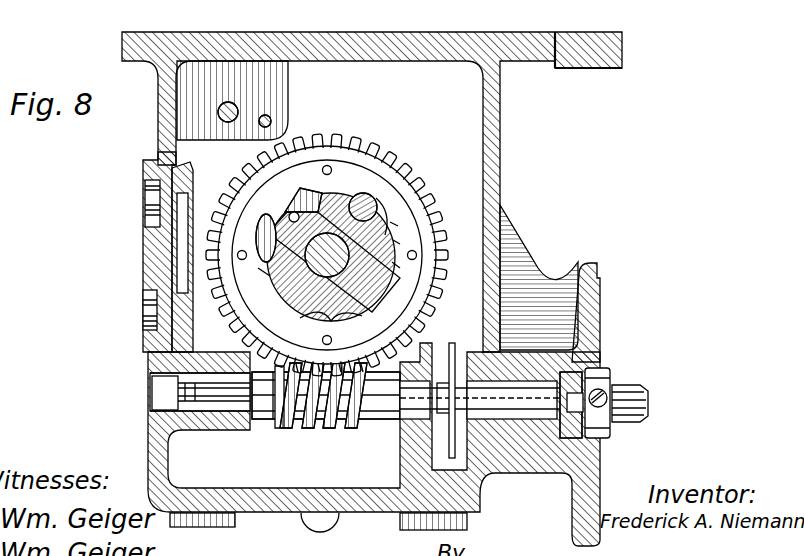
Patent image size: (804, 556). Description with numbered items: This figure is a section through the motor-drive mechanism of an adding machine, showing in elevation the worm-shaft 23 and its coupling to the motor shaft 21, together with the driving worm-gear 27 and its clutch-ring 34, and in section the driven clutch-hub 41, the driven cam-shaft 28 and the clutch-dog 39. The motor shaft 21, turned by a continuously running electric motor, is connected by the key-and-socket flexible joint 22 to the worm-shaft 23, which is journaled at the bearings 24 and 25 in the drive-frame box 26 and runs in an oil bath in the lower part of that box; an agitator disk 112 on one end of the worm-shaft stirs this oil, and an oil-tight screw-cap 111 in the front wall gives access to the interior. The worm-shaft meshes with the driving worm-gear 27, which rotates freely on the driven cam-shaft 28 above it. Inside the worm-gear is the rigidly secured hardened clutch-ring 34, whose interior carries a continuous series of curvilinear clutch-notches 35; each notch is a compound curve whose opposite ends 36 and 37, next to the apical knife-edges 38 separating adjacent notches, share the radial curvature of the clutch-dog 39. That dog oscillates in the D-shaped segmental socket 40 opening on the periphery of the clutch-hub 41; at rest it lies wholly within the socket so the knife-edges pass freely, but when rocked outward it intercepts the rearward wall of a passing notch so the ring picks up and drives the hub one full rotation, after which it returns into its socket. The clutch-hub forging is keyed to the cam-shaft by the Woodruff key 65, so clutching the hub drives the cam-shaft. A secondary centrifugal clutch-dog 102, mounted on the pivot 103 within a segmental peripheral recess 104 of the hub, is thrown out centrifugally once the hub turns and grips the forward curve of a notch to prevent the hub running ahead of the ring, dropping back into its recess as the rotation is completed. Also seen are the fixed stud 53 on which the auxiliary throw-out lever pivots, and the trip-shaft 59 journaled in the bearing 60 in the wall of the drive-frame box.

The motor shaft 21 is at (646, 386).
The key-and-socket flexible joint 22 is at (606, 377).
The worm-shaft 23 is at (498, 392).
The bearing 24 is at (232, 422).
The bearing 25 is at (526, 452).
The drive-frame box 26 is at (500, 207).
The driving worm-gear 27 is at (374, 143).
The driven cam-shaft 28 is at (375, 292).
The clutch-ring 34 is at (327, 255).
The clutch-notches 35 is at (405, 236).
The end of clutch-notch 36 is at (372, 198).
The end of clutch-notch 37 is at (366, 315).
The apical knife-edges 38 is at (320, 326).
The clutch-dog 39 is at (382, 208).
The segmental socket 40 is at (397, 221).
The driven clutch-hub 41 is at (405, 269).
The fixed stud 53 is at (272, 120).
The trip-shaft 59 is at (243, 105).
The bearing 60 is at (228, 133).
The Woodruff key 65 is at (300, 290).
The secondary centrifugal clutch-dog 102 is at (278, 229).
The pivot 103 is at (289, 213).
The segmental peripheral recess 104 is at (262, 274).
The oil-tight screw-cap 111 is at (150, 176).
The agitator disk 112 is at (449, 352).